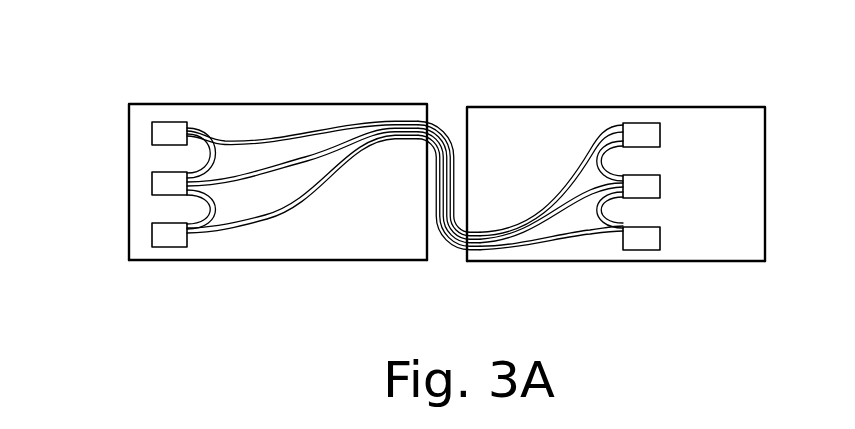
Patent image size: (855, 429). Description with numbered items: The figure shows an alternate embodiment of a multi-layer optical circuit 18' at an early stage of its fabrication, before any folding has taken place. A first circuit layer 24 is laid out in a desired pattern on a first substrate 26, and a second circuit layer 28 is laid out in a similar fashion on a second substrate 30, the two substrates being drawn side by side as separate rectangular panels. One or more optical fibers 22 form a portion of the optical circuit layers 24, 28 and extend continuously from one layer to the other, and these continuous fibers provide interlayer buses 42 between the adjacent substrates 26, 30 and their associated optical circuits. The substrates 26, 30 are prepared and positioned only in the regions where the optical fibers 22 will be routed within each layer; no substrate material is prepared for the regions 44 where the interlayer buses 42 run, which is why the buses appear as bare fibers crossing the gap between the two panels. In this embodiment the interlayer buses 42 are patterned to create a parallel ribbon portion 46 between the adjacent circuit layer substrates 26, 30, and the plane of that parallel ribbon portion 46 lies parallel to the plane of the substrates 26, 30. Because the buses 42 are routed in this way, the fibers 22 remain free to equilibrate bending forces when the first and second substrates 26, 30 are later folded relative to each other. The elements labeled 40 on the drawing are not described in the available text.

The multi-layer optical circuit 18' is at (411, 178).
The optical fibers 22 is at (233, 135).
The first circuit layer 24 is at (282, 250).
The first substrate 26 is at (192, 261).
The second circuit layer 28 is at (695, 242).
The second substrate 30 is at (643, 258).
The optical connectors 40 is at (152, 133).
The interlayer buses 42 is at (453, 247).
The regions 44 is at (445, 113).
The parallel ribbon portion 46 is at (456, 173).